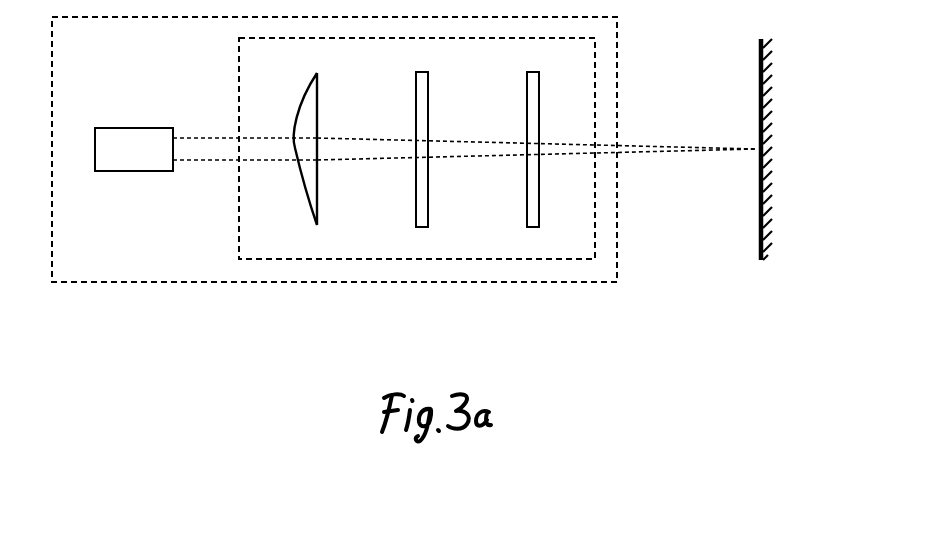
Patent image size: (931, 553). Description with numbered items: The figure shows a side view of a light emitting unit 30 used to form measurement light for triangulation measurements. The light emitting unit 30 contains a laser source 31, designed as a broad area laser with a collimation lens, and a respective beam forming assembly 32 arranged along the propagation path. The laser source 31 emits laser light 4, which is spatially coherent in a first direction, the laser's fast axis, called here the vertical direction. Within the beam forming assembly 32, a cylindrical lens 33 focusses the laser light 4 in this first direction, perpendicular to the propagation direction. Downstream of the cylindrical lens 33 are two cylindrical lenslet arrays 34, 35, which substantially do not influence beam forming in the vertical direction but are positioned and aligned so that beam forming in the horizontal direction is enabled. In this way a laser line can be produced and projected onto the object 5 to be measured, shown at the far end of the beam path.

The light emitting unit 30 is at (118, 66).
The beam forming assembly 32 is at (285, 74).
The laser source 31 is at (122, 181).
The laser light 4 is at (454, 186).
The cylindrical lens 33 is at (271, 199).
The cylindrical lenslet array 34 is at (384, 198).
The cylindrical lenslet array 35 is at (496, 198).
The object 5 is at (790, 149).